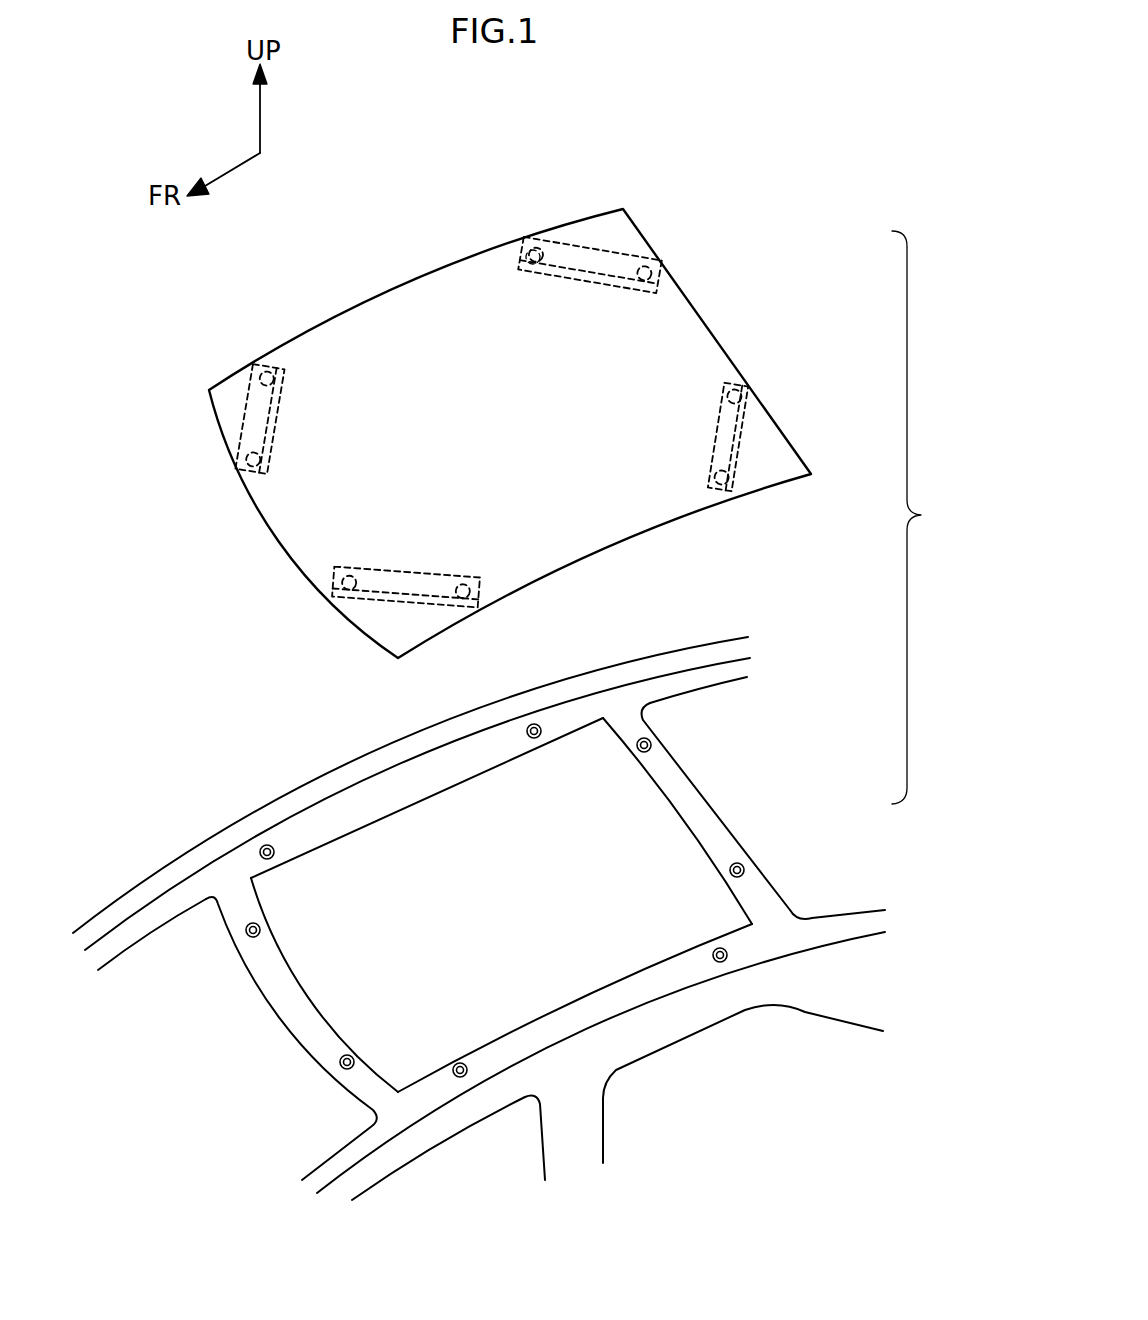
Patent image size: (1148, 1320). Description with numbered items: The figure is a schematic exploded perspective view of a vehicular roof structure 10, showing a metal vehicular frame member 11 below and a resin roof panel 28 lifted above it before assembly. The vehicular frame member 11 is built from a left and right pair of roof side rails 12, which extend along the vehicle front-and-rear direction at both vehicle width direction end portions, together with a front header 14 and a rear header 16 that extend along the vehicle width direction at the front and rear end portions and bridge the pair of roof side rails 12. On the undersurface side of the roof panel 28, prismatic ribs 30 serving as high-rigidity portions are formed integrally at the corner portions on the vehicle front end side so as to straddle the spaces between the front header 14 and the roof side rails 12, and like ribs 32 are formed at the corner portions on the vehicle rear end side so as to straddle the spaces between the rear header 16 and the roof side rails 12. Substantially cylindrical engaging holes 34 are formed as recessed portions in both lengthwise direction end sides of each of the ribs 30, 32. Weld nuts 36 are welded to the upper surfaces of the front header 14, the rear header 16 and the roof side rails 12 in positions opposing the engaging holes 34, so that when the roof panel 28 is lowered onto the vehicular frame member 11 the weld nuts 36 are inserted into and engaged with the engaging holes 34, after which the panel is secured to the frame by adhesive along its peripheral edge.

The vehicular roof structure 10 is at (928, 517).
The vehicular frame member 11 is at (479, 918).
The roof side rails 12 is at (315, 823).
The front header 14 is at (275, 990).
The rear header 16 is at (702, 806).
The roof panel 28 is at (668, 186).
The ribs 30 is at (250, 414).
The ribs 32 is at (583, 250).
The engaging holes 34 is at (522, 240).
The weld nuts 36 is at (638, 752).